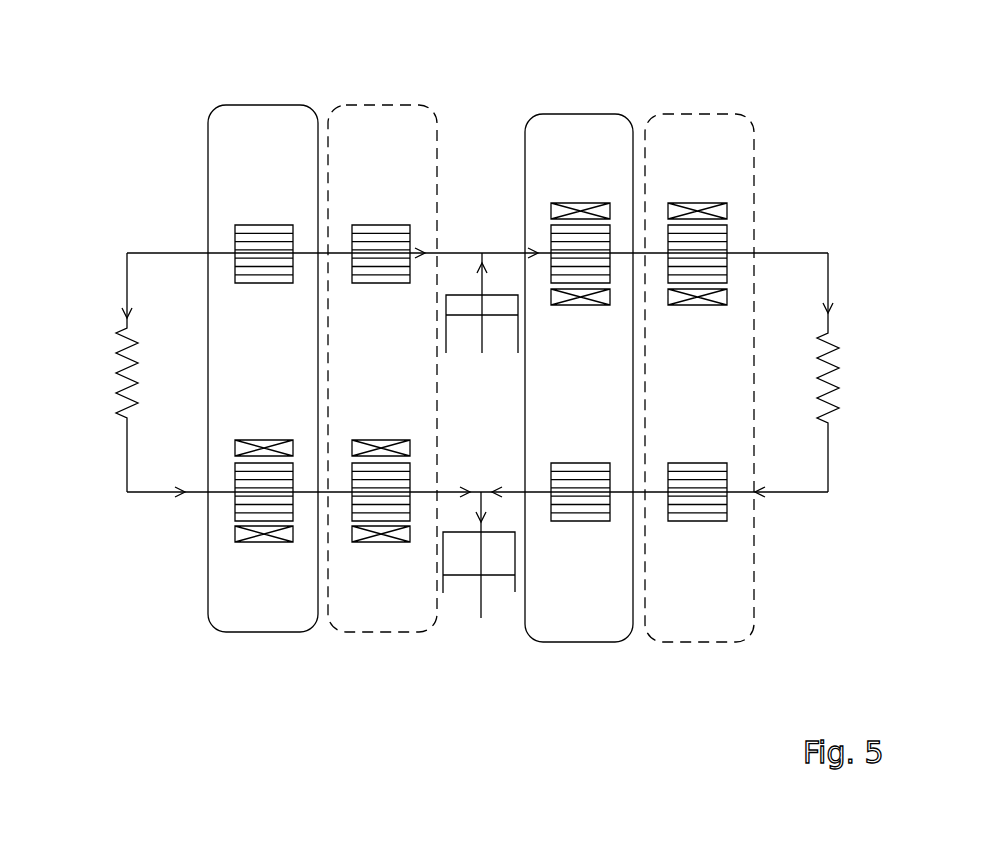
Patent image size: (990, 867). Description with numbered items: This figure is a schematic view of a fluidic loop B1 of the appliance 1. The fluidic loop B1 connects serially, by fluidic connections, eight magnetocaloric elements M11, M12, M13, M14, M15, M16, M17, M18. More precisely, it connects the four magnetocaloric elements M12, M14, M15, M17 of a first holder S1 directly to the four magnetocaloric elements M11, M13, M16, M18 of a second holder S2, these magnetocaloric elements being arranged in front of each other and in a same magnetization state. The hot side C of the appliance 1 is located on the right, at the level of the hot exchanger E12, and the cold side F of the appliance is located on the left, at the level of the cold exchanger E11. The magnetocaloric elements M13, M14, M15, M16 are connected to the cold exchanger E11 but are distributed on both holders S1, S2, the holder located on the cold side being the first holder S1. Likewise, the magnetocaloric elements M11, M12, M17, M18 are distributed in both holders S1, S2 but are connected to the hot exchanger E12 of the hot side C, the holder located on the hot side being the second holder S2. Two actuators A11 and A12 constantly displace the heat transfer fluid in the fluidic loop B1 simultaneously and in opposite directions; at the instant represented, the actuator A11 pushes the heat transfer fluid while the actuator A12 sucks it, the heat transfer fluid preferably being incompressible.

The appliance 1 is at (870, 97).
The magnetocaloric element M11 is at (693, 503).
The magnetocaloric element M12 is at (577, 503).
The magnetocaloric element M13 is at (374, 510).
The magnetocaloric element M14 is at (257, 510).
The magnetocaloric element M15 is at (268, 242).
The magnetocaloric element M16 is at (384, 242).
The magnetocaloric element M17 is at (586, 242).
The magnetocaloric element M18 is at (702, 242).
The actuator A11 is at (494, 303).
The actuator A12 is at (502, 568).
The cold exchanger E11 is at (120, 385).
The hot exchanger E12 is at (835, 410).
The first holder S1 is at (273, 105).
The second holder S2 is at (345, 632).
The cold side F is at (143, 208).
The hot side C is at (817, 215).
The fluidic loop B1 is at (910, 205).